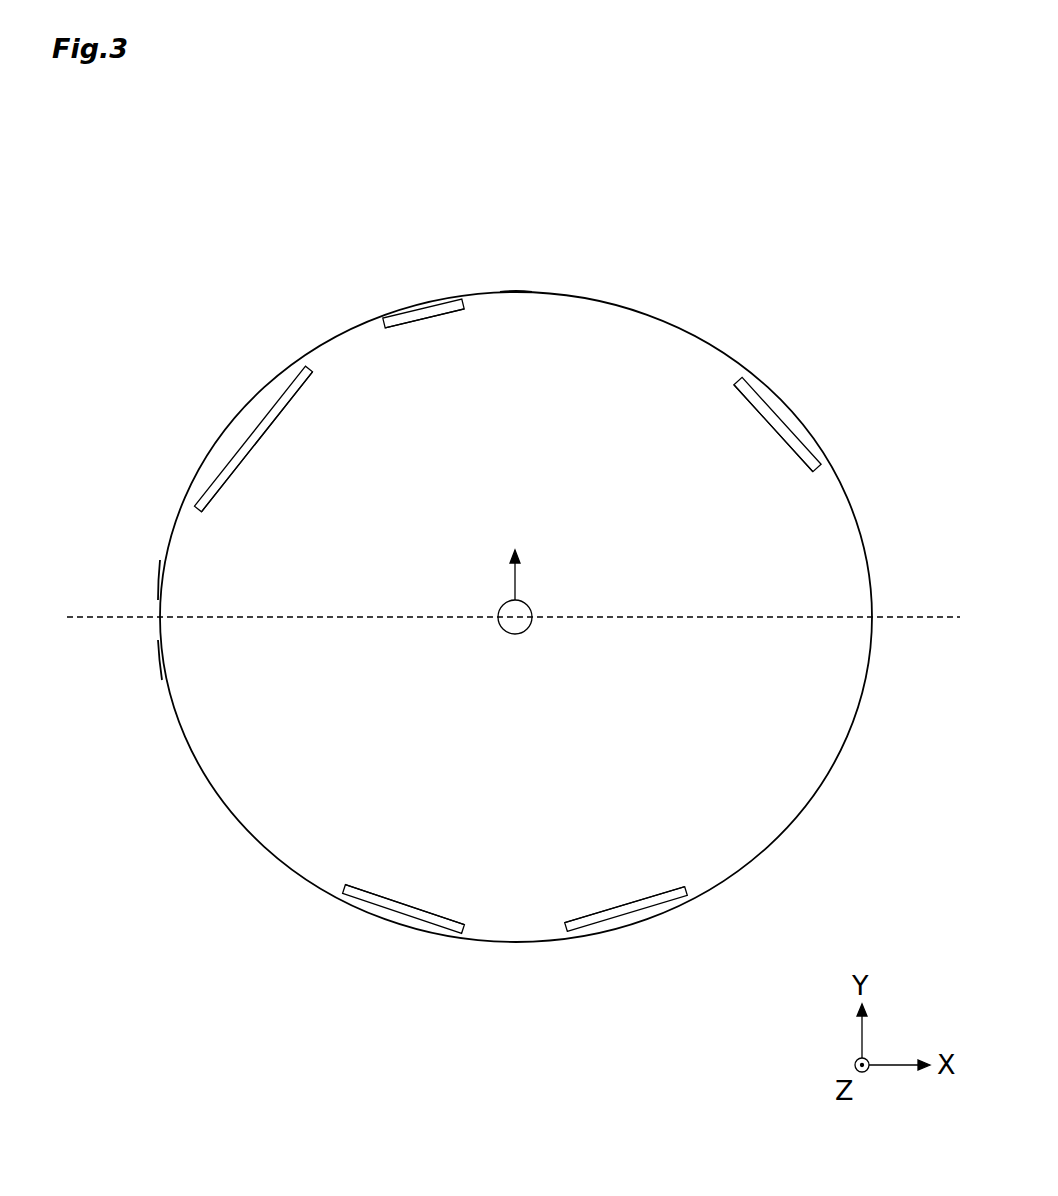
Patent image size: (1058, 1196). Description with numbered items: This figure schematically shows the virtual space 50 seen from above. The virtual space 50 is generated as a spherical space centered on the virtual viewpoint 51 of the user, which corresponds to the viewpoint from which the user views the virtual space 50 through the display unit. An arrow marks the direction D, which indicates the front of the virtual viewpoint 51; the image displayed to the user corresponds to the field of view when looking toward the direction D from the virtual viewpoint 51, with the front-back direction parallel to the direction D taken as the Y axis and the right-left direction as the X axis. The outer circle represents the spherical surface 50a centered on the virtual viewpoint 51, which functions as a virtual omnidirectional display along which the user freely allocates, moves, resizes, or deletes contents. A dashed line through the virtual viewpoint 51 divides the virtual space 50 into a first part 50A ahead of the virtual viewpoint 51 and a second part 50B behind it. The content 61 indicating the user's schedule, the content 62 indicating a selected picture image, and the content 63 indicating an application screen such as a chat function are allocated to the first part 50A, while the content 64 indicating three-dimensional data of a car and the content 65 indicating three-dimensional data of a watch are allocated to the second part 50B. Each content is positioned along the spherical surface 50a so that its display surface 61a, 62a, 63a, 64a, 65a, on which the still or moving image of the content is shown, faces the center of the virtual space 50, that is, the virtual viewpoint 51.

The virtual space 50 is at (655, 315).
The spherical surface 50a is at (530, 293).
The first part 50A is at (158, 594).
The second part 50B is at (156, 652).
The virtual viewpoint 51 is at (517, 636).
The direction D is at (517, 578).
The content 61 is at (240, 443).
The display surface 61a is at (235, 470).
The content 62 is at (420, 308).
The display surface 62a is at (413, 325).
The content 63 is at (773, 408).
The display surface 63a is at (780, 435).
The content 64 is at (613, 923).
The display surface 64a is at (623, 902).
The content 65 is at (418, 922).
The display surface 65a is at (407, 903).